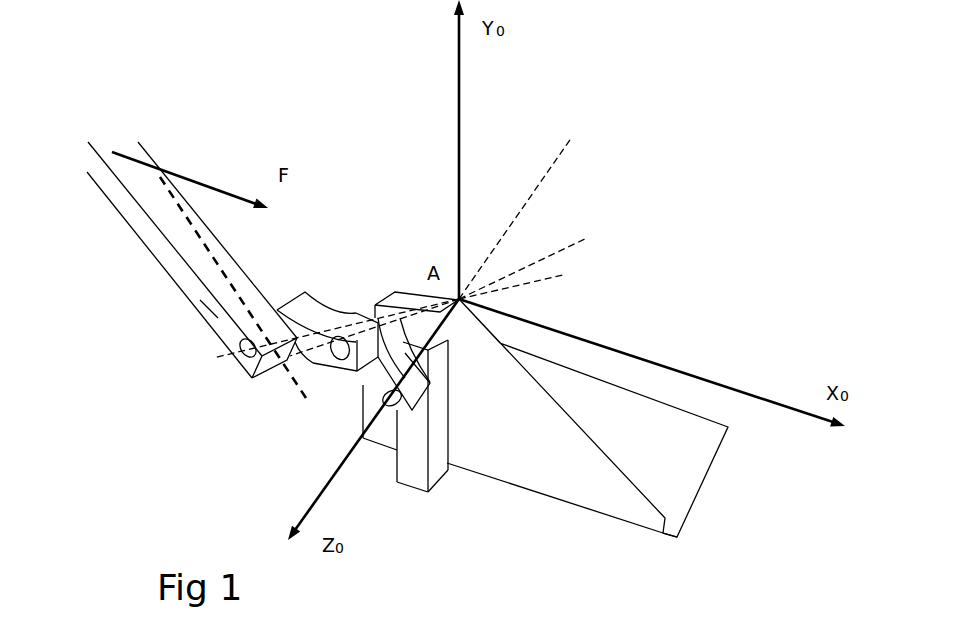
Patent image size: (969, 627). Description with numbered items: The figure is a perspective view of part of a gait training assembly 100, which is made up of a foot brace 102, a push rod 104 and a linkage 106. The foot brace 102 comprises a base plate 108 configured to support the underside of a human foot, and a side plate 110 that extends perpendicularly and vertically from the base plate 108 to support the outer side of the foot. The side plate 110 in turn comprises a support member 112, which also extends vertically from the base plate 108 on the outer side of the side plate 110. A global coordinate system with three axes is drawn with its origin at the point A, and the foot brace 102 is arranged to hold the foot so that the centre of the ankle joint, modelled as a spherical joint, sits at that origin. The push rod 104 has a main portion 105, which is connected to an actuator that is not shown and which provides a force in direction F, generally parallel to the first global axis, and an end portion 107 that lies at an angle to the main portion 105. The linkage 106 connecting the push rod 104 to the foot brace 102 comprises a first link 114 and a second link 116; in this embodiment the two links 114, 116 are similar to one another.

The gait training assembly 100 is at (688, 222).
The foot brace 102 is at (684, 567).
The push rod 104 is at (198, 228).
The main portion 105 is at (125, 147).
The linkage 106 is at (282, 435).
The end portion 107 is at (213, 305).
The base plate 108 is at (672, 462).
The side plate 110 is at (529, 457).
The support member 112 is at (417, 468).
The first link 114 is at (374, 377).
The second link 116 is at (310, 348).